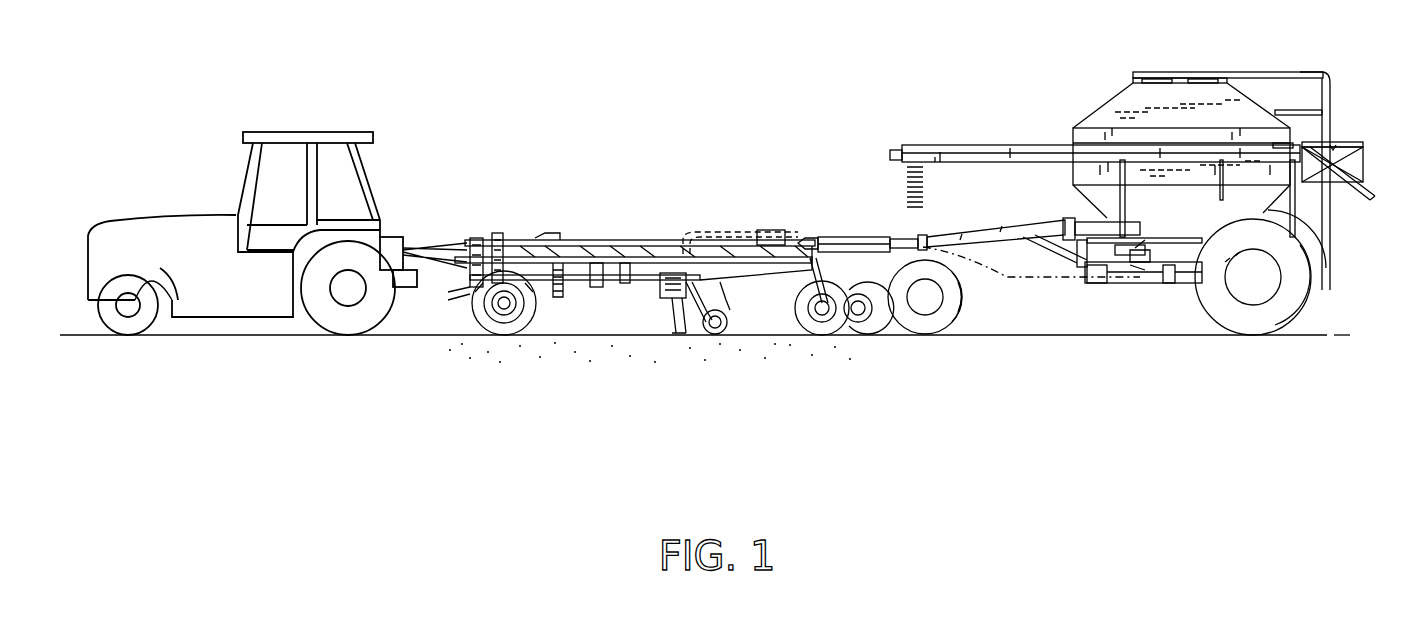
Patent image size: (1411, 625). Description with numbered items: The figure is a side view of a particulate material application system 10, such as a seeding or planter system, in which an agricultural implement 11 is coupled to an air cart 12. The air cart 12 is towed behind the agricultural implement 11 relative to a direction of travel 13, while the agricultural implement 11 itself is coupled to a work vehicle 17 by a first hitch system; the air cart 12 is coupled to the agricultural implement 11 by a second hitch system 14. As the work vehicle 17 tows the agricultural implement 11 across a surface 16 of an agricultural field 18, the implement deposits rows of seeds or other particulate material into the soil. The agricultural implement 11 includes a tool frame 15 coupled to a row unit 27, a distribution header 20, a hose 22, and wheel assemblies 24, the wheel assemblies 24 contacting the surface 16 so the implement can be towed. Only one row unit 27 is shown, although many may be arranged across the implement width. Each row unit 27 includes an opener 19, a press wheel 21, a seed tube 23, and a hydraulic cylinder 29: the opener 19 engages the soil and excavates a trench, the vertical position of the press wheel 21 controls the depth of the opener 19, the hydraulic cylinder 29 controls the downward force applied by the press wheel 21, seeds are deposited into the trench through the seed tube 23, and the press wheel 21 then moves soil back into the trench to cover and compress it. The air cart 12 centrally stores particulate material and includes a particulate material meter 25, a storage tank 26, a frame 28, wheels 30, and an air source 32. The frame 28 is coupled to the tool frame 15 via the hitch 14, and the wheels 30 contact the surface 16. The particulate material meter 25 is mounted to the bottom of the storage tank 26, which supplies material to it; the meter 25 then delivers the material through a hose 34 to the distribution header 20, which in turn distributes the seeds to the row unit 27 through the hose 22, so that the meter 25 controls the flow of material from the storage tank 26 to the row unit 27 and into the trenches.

The particulate material application system 10 is at (644, 192).
The agricultural implement 11 is at (560, 237).
The air cart 12 is at (1098, 70).
The direction of travel 13 is at (744, 133).
The second hitch system 14 is at (807, 236).
The tool frame 15 is at (667, 255).
The surface 16 is at (1097, 336).
The work vehicle 17 is at (300, 112).
The agricultural field 18 is at (907, 449).
The opener 19 is at (669, 340).
The distribution header 20 is at (773, 230).
The press wheel 21 is at (733, 322).
The hose 22 is at (718, 233).
The seed tube 23 is at (707, 342).
The wheel assemblies 24 is at (493, 337).
The particulate material meter 25 is at (1148, 260).
The storage tank 26 is at (1133, 108).
The row unit 27 is at (653, 316).
The frame 28 is at (977, 231).
The hydraulic cylinder 29 is at (635, 304).
The wheels 30 is at (977, 308).
The air source 32 is at (1305, 224).
The hose 34 is at (1013, 284).